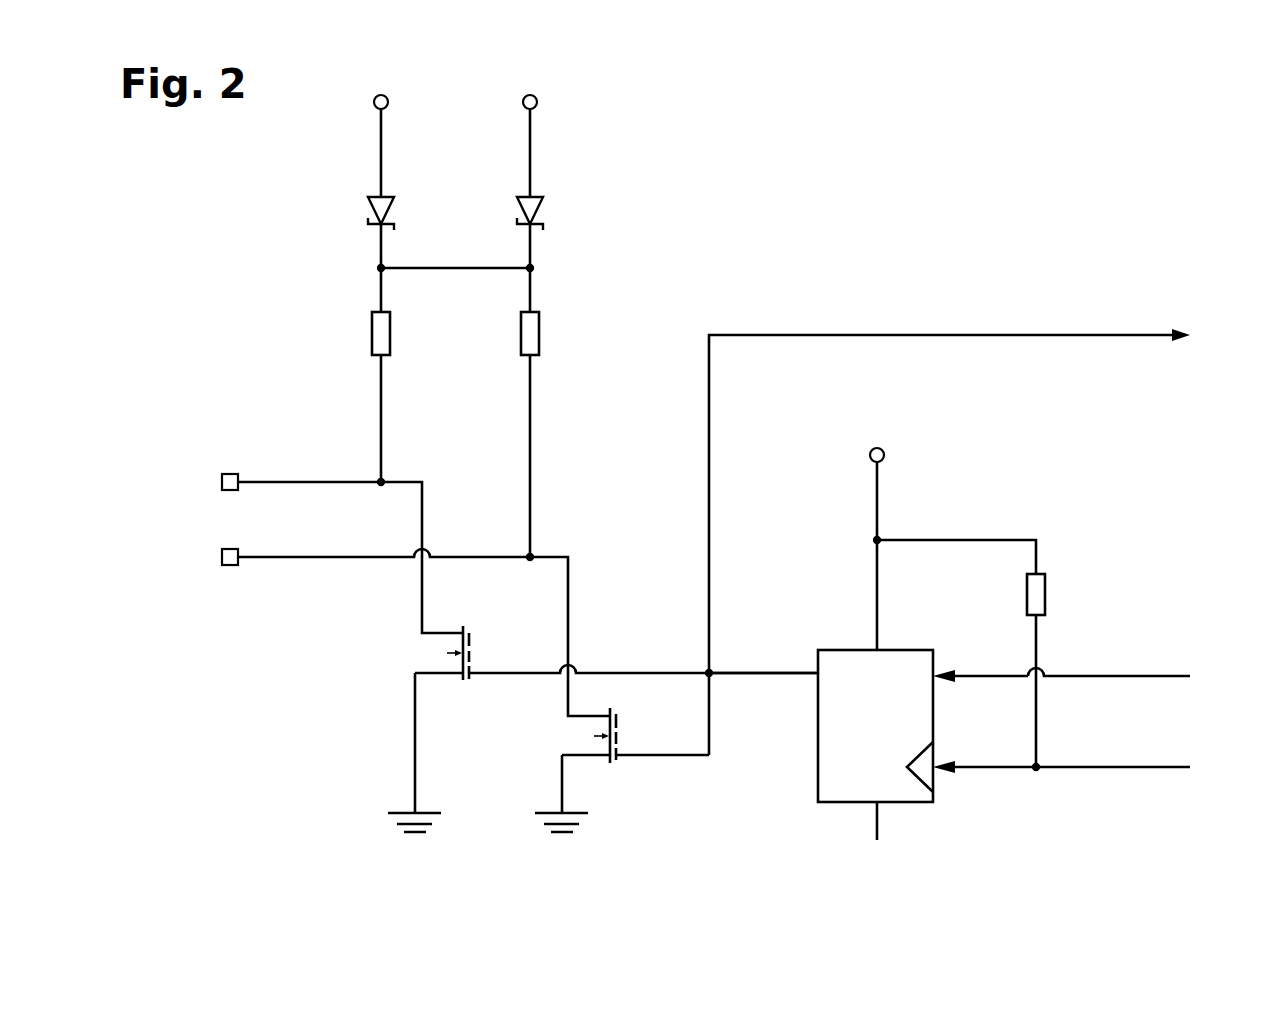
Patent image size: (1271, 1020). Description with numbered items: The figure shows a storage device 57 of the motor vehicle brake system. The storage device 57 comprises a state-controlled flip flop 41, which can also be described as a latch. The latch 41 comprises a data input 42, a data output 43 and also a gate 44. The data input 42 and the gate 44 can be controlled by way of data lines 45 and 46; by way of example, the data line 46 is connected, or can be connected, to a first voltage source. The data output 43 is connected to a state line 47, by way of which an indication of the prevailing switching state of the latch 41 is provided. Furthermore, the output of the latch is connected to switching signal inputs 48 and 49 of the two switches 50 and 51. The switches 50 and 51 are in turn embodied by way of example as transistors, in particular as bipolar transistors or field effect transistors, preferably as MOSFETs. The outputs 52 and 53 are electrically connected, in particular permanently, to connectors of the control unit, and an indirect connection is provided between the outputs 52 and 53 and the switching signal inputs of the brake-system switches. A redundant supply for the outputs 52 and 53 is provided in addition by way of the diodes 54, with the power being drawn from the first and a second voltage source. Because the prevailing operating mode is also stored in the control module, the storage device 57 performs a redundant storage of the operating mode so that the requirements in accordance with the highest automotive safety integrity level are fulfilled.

The state-controlled flip flop 41 is at (860, 738).
The data input 42 is at (936, 674).
The data output 43 is at (818, 672).
The gate 44 is at (936, 771).
The data line 45 is at (1074, 674).
The data line 46 is at (1076, 769).
The state line 47 is at (907, 335).
The switching signal input 48 is at (480, 661).
The switching signal input 49 is at (622, 739).
The switch 50 is at (473, 692).
The switch 51 is at (621, 770).
The output 52 is at (222, 482).
The output 53 is at (222, 557).
The diode 54 is at (368, 207).
The storage device 57 is at (1013, 160).